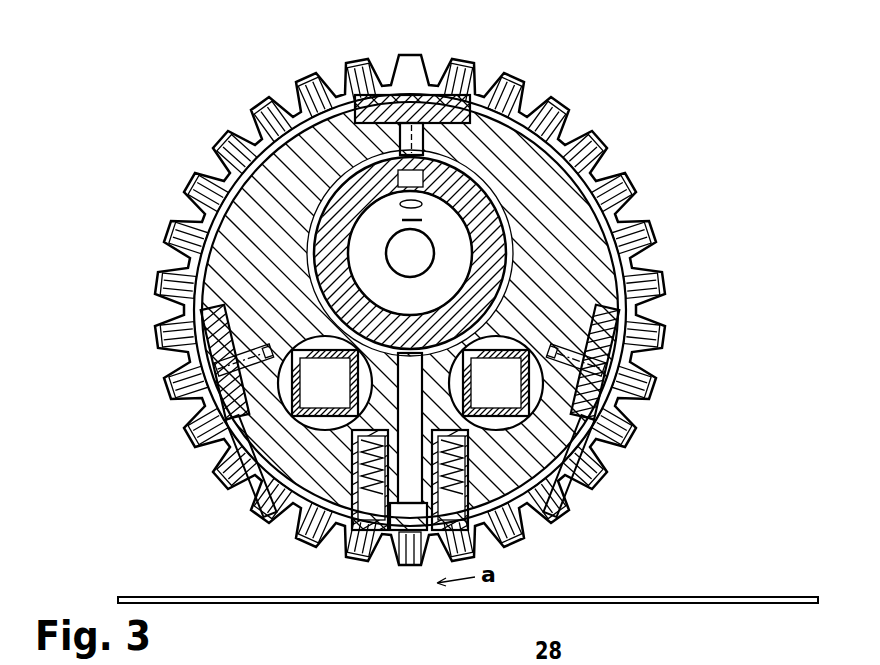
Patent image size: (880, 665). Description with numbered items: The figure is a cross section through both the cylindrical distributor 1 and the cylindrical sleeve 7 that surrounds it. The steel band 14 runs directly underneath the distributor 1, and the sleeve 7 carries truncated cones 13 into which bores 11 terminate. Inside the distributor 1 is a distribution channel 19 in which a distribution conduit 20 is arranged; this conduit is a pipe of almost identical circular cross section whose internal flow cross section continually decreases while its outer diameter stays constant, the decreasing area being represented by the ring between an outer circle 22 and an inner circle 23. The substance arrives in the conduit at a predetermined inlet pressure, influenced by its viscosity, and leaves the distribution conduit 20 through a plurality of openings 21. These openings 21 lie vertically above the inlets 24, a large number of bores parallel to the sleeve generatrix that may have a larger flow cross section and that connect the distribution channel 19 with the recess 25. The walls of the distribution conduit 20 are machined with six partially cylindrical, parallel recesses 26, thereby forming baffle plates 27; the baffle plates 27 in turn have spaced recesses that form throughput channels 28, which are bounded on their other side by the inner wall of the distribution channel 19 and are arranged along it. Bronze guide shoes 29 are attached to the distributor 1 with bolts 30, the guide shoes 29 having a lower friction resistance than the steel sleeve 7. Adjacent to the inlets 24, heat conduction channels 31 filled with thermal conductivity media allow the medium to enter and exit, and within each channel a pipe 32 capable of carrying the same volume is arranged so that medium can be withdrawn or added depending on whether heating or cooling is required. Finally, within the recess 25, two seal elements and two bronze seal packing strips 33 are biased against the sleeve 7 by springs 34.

The distributor 1 is at (573, 145).
The sleeve 7 is at (577, 147).
The bores 11 is at (661, 229).
The truncated cones 13 is at (540, 88).
The steel band 14 is at (723, 598).
The distribution channel 19 is at (512, 210).
The distribution conduit 20 is at (300, 272).
The openings 21 is at (528, 173).
The outer circle 22 is at (641, 188).
The inner circle 23 is at (445, 268).
The inlets 24 is at (602, 447).
The recess 25 is at (400, 518).
The recesses 26 is at (312, 135).
The baffle plates 27 is at (368, 90).
The throughput channels 28 is at (640, 263).
The guide shoes 29 is at (418, 75).
The bolts 30 is at (440, 70).
The heat conduction channels 31 is at (217, 490).
The pipe 32 is at (220, 458).
The seal packing strips 33 is at (297, 537).
The springs 34 is at (567, 497).